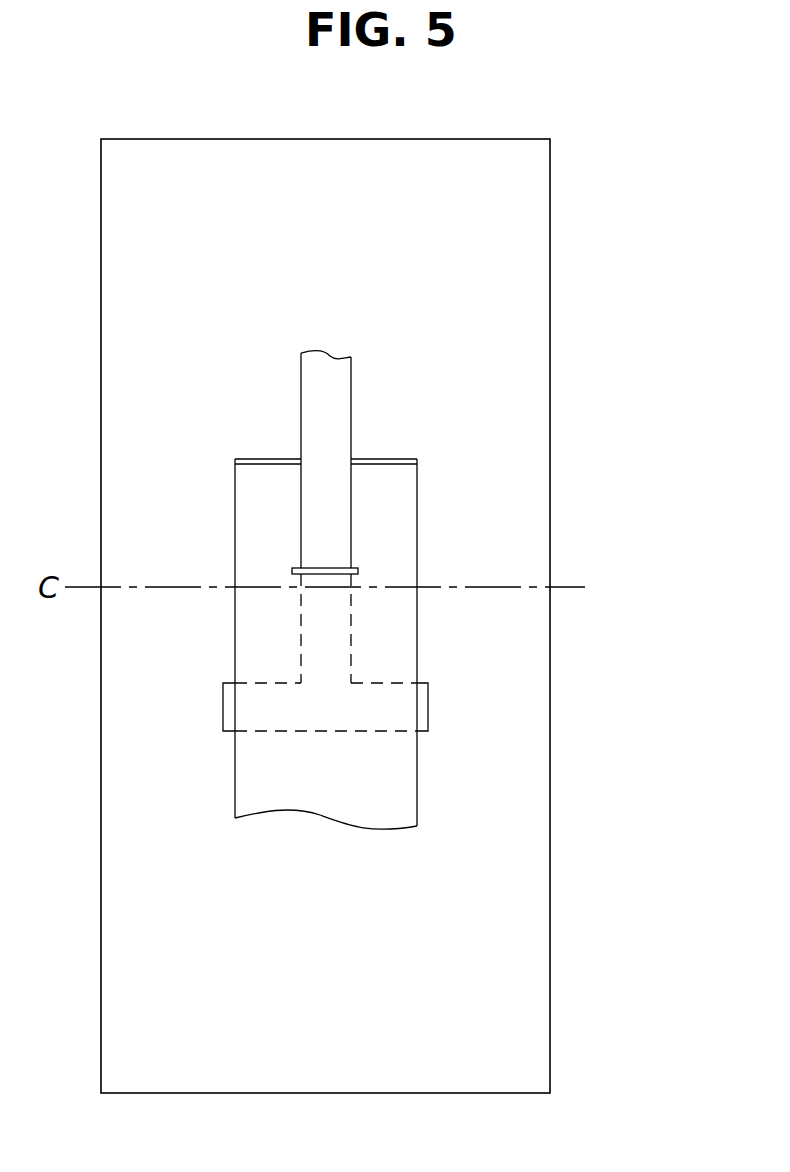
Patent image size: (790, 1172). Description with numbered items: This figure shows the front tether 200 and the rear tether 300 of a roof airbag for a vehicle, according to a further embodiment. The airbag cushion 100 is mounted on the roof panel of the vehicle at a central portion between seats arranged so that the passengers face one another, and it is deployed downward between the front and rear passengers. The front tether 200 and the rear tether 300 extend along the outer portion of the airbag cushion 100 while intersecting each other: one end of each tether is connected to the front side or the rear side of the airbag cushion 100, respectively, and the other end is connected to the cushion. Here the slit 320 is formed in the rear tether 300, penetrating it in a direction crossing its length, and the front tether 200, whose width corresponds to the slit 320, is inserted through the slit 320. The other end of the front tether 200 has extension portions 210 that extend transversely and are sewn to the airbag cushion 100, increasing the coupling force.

The airbag cushion 100 is at (538, 984).
The front tether 200 is at (340, 392).
The extension portions 210 is at (429, 706).
The rear tether 300 is at (417, 786).
The slit 320 is at (358, 572).